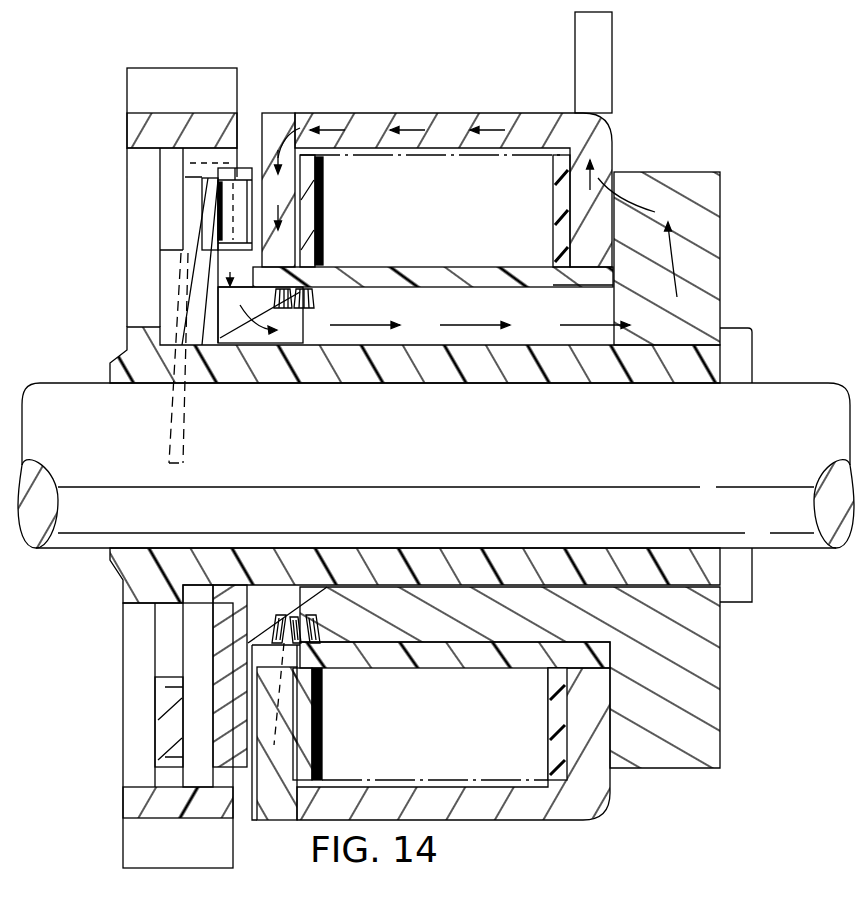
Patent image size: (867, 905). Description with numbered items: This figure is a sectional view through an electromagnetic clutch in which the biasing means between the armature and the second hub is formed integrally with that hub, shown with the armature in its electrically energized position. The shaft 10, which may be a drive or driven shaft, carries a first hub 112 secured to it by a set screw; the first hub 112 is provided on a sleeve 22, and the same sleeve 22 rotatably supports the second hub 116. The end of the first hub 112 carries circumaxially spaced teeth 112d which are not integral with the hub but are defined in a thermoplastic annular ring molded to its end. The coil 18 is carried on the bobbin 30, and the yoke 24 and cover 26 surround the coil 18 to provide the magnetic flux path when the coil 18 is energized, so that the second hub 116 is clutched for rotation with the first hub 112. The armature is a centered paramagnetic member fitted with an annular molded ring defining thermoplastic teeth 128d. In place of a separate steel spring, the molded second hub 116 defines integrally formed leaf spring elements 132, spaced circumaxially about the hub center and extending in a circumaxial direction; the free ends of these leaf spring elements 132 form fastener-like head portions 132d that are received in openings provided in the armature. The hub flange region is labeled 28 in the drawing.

The shaft 10 is at (780, 522).
The coil 18 is at (370, 153).
The sleeve 22 is at (733, 328).
The yoke 24 is at (500, 113).
The cover 26 is at (283, 112).
The hub flange 28 is at (266, 347).
The bobbin 30 is at (476, 268).
The first hub 112 is at (686, 172).
The teeth 112d is at (322, 725).
The second hub 116 is at (123, 805).
The teeth 128d is at (340, 647).
The leaf spring elements 132 is at (200, 222).
The head portions 132d is at (180, 178).